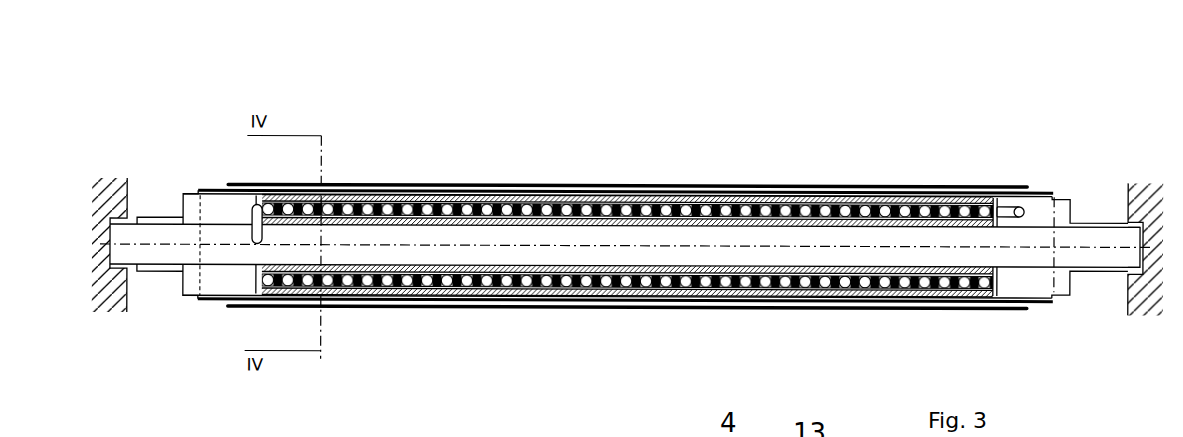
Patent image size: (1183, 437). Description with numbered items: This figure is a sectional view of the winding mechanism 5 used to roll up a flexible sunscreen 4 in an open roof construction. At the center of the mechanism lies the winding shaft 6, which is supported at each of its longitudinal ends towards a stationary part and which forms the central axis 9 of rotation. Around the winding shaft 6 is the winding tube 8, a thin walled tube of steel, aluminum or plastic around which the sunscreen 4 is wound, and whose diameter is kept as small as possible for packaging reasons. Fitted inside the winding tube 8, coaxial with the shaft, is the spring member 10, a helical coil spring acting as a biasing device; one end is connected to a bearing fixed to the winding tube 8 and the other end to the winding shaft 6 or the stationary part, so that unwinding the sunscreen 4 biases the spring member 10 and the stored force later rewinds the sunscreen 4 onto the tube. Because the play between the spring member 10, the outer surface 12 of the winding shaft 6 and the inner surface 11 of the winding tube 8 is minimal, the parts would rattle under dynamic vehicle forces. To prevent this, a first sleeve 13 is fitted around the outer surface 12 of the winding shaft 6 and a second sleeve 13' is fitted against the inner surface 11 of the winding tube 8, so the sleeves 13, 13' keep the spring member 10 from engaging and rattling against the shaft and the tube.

The flexible sunscreen 4 is at (373, 181).
The winding mechanism 5 is at (197, 155).
The winding shaft 6 is at (1087, 239).
The winding tube 8 is at (1043, 190).
The central axis 9 is at (1118, 245).
The spring member 10 is at (688, 194).
The inner surface 11 is at (603, 194).
The outer surface 12 is at (538, 194).
The first sleeve 13 is at (344, 138).
The second sleeve 13' is at (737, 125).